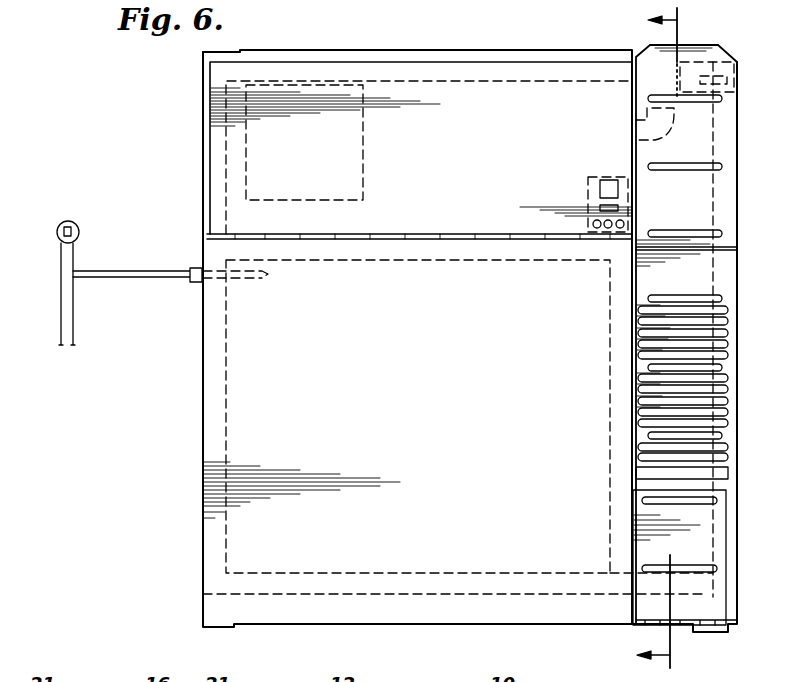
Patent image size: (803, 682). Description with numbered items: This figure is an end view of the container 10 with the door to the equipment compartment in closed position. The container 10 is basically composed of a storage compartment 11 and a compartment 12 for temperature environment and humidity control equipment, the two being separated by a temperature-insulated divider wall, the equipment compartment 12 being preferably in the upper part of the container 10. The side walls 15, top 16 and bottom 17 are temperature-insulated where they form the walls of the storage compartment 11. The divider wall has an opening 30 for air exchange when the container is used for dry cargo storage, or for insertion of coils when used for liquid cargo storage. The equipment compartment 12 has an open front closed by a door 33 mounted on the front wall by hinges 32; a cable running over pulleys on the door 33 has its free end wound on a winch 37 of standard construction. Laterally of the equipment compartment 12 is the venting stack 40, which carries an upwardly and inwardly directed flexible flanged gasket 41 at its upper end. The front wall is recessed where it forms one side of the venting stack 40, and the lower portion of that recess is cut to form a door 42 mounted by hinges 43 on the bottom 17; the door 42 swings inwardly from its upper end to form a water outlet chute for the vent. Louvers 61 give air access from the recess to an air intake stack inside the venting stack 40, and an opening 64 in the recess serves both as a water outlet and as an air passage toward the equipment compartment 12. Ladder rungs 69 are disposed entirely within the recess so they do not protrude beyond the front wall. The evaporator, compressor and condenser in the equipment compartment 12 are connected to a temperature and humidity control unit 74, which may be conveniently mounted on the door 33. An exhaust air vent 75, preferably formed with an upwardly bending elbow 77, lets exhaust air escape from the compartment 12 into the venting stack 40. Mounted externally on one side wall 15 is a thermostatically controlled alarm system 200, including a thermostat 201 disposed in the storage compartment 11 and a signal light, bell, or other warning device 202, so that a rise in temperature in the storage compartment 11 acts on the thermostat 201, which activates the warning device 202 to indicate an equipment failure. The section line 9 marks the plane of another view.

The section line 9- 9 is at (671, 342).
The container 10 is at (382, 80).
The storage compartment 11 is at (280, 526).
The compartment for temperature environment and humidity control equipment 12 is at (490, 120).
The side walls 15 is at (202, 404).
The top 16 is at (575, 55).
The bottom 17 is at (472, 574).
The opening 30 is at (246, 146).
The hinges 32 is at (468, 233).
The door 33 is at (437, 93).
The winch 37 is at (734, 82).
The venting stack 40 is at (736, 213).
The flexible flanged gasket 41 is at (718, 50).
The door 42 is at (716, 520).
The hinges 43 is at (710, 622).
The louvers 61 is at (728, 392).
The opening 64 is at (720, 472).
The ladder rungs 69 is at (705, 238).
The temperature and humidity control unit 74 is at (586, 191).
The exhaust air vent 75 is at (658, 140).
The upwardly bending elbow 77 is at (672, 125).
The thermostatically controlled alarm system 200 is at (150, 280).
The thermostat 201 is at (268, 275).
The signal light, bell, or other warning device 202 is at (58, 240).